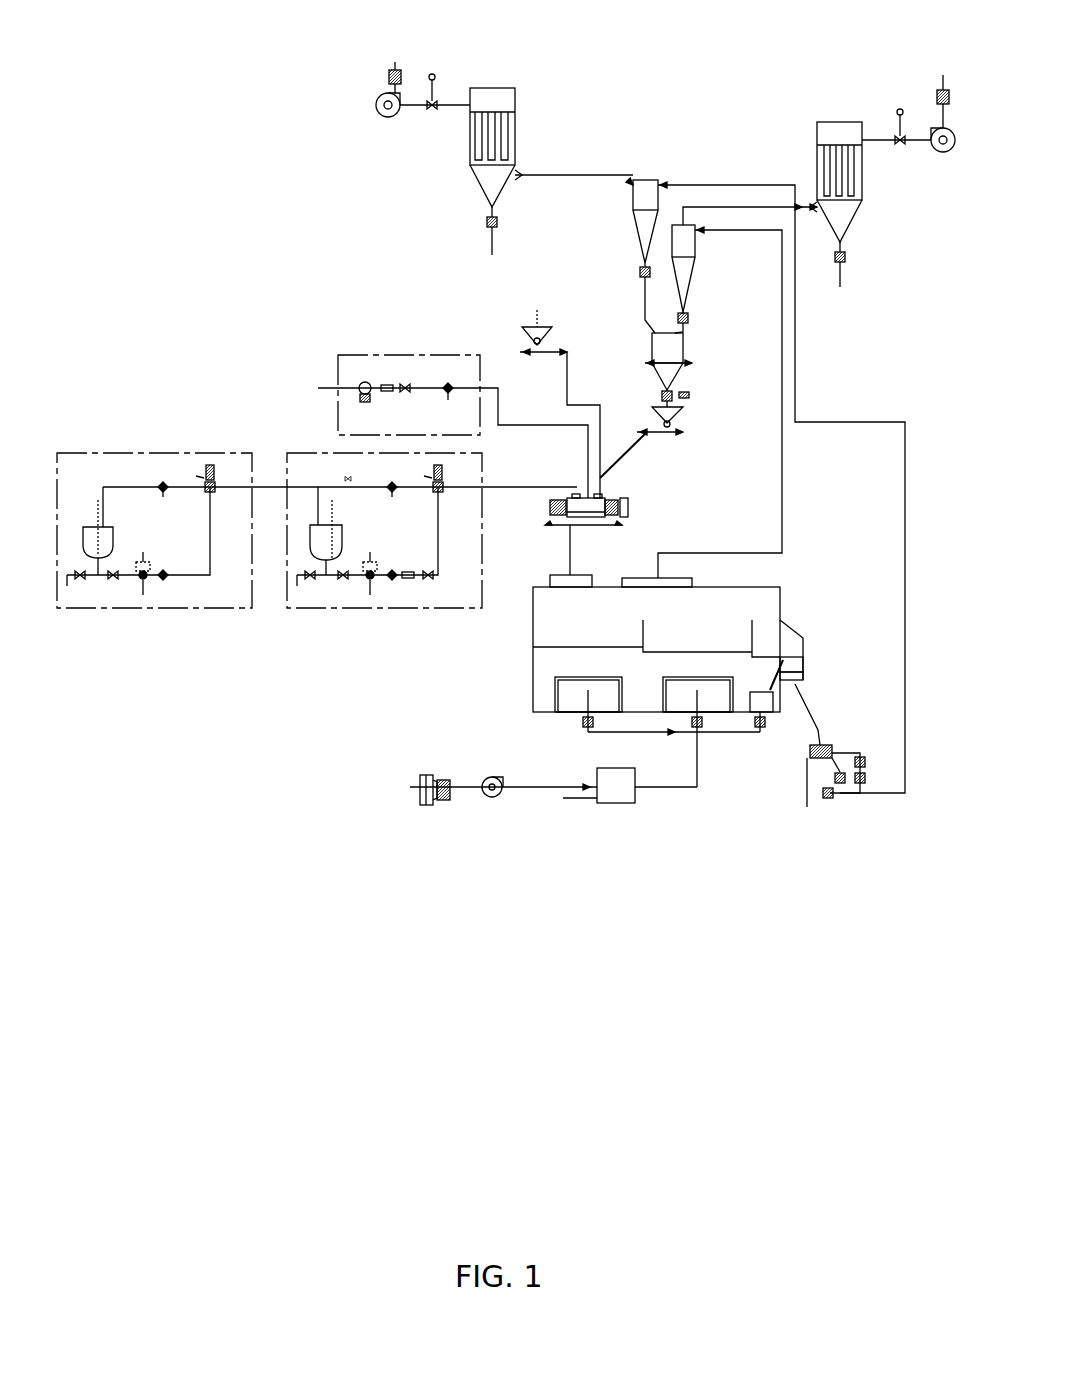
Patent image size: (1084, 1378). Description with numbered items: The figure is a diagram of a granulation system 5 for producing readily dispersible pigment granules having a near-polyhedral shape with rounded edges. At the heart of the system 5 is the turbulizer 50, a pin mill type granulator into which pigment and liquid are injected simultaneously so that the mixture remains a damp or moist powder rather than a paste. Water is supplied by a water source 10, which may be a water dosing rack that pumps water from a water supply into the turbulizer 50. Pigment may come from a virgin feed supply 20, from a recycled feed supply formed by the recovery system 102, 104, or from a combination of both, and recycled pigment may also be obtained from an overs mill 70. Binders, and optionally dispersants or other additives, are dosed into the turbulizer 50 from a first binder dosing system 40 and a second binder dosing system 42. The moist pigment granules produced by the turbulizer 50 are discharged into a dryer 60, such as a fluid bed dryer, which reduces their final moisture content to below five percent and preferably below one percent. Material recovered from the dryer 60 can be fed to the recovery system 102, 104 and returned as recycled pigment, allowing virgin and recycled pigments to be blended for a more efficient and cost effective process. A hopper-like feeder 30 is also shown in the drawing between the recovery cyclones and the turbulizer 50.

The system 5 is at (870, 70).
The water source 10 is at (352, 343).
The virgin feed supply 20 is at (505, 310).
The recycle hopper feeder 30 is at (688, 405).
The first binder dosing system 40 is at (100, 617).
The second binder dosing system 42 is at (307, 615).
The turbulizer 50 is at (562, 522).
The dryer 60 is at (730, 740).
The overs mill 70 is at (850, 797).
The recovery system 102 is at (641, 175).
The recovery system 104 is at (677, 215).